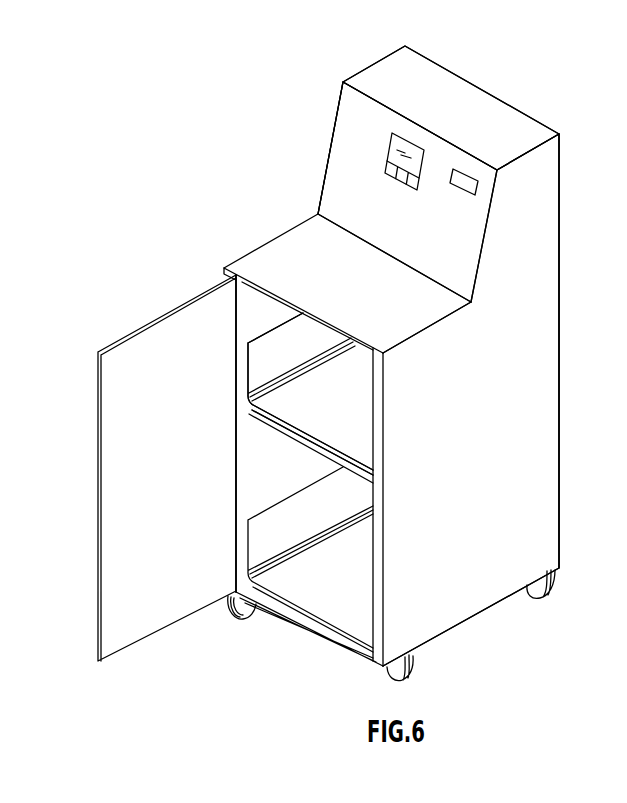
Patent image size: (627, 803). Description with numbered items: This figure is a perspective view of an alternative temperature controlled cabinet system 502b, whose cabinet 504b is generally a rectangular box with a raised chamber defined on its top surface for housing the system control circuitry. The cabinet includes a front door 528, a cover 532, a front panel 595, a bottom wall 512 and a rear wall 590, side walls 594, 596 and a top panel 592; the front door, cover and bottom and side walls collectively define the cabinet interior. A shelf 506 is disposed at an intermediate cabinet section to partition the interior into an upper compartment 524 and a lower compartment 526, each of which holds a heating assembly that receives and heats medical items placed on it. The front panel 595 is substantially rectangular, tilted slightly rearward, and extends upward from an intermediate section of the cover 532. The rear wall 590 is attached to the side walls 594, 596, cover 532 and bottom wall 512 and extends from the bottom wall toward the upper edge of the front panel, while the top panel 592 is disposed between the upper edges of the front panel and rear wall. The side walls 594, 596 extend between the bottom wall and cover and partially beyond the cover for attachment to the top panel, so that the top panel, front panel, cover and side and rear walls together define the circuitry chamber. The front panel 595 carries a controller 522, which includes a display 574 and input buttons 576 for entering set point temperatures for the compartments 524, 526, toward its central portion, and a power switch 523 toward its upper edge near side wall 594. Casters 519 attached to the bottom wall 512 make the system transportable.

The temperature controlled cabinet system 502b is at (338, 358).
The cabinet 504b is at (434, 354).
The top panel 592 is at (535, 131).
The rear wall 590 is at (560, 223).
The side wall 594 is at (550, 270).
The side wall 596 is at (336, 122).
The front panel 595 is at (340, 140).
The display 574 is at (389, 147).
The buttons 576 is at (388, 165).
The controller 522 is at (410, 184).
The power switch 523 is at (479, 182).
The cover 532 is at (407, 324).
The upper compartment 524 is at (238, 291).
The lower compartment 526 is at (238, 466).
The front door 528 is at (98, 400).
The shelf 506 is at (258, 482).
The bottom wall 512 is at (292, 612).
The casters 519 is at (413, 653).